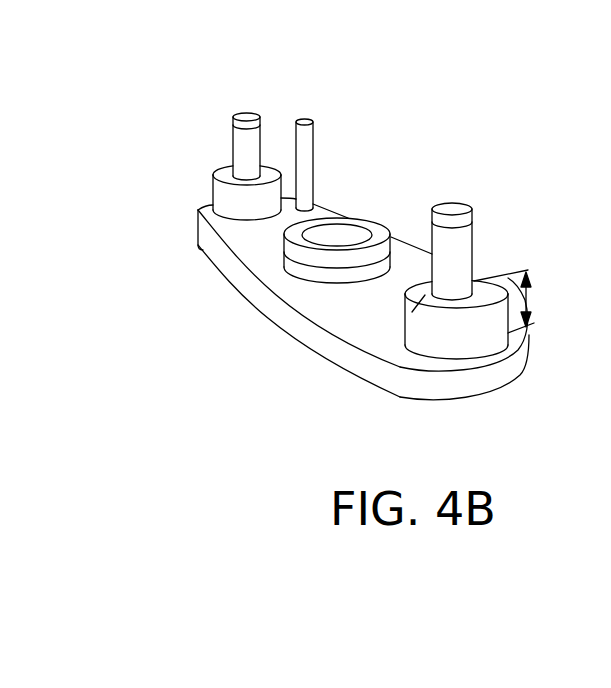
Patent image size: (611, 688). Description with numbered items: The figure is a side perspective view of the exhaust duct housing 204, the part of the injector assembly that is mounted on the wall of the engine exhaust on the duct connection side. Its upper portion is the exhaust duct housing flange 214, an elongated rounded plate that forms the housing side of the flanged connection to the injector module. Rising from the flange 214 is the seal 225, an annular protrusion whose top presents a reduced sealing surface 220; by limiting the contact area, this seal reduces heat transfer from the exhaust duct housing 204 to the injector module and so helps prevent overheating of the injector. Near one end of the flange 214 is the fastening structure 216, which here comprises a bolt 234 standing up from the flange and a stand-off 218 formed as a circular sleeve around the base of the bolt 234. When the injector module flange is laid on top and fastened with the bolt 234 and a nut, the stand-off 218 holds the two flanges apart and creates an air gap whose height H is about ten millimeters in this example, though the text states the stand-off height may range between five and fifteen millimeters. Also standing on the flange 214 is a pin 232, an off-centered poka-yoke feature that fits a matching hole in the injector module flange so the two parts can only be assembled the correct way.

The exhaust duct housing 204 is at (446, 72).
The exhaust duct housing flange 214 is at (481, 381).
The fastening structure 216 is at (474, 196).
The stand-off 218 is at (486, 326).
The reduced sealing surface 220 is at (363, 221).
The seal 225 is at (295, 266).
The pin 232 is at (313, 143).
The bolt 234 is at (467, 245).
The height of the air gap H is at (515, 301).